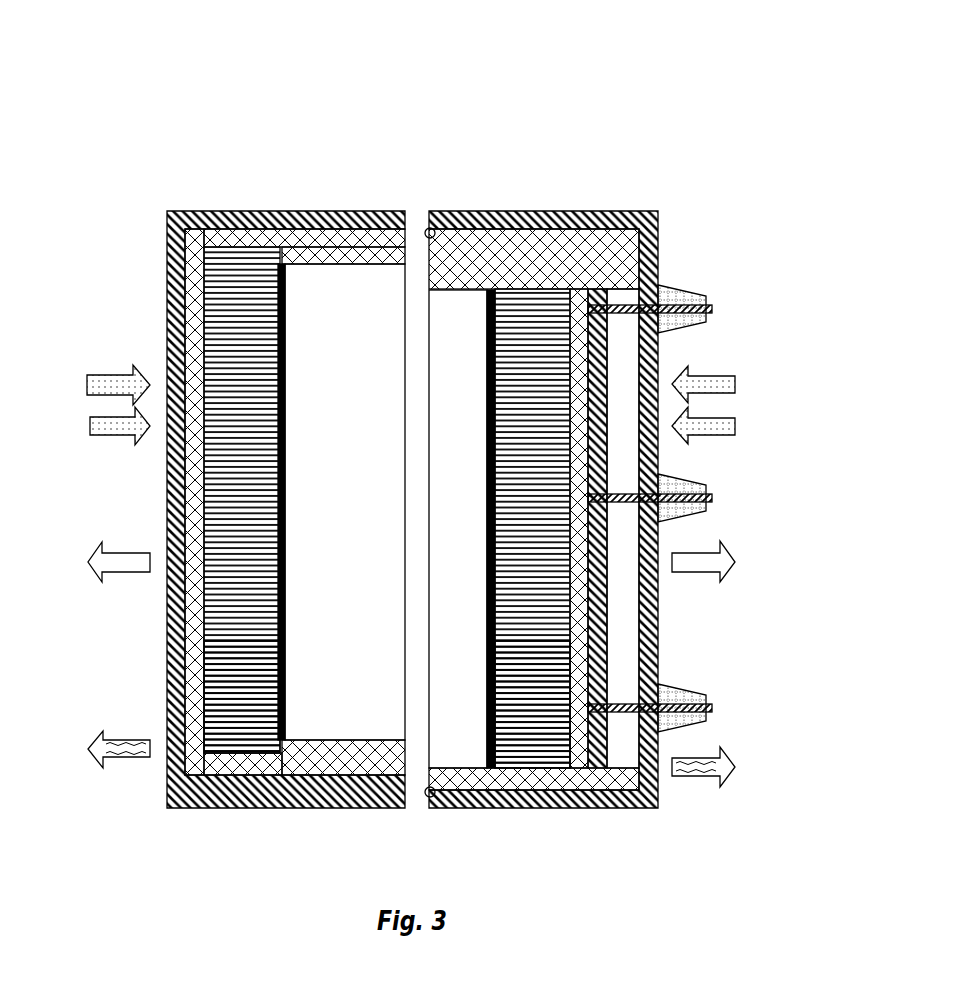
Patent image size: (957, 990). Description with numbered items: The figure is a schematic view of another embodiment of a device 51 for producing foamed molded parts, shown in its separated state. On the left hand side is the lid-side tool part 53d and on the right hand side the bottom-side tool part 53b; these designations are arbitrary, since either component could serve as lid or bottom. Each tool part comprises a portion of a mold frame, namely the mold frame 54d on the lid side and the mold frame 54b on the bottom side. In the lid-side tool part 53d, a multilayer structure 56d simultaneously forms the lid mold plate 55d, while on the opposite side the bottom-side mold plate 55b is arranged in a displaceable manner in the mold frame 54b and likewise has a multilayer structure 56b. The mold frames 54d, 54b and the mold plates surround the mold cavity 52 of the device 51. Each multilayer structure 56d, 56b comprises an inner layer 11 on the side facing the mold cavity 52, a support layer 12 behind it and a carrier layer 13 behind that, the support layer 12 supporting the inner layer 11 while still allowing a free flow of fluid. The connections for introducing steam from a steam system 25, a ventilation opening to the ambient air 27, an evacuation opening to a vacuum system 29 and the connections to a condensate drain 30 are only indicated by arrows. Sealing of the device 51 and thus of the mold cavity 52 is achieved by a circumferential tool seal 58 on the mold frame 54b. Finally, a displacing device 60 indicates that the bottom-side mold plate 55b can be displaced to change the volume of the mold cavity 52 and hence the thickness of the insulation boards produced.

The device for producing foamed molded parts 51 is at (110, 48).
The lid-side tool part 53d is at (397, 127).
The bottom-side tool part 53b is at (660, 127).
The multilayer structure 56d is at (283, 195).
The multilayer structure 56b is at (588, 190).
The circumferential tool seal 58 is at (426, 226).
The mold frame 54d is at (136, 232).
The mold frame 54b is at (676, 242).
The steam system 25 is at (88, 383).
The ambient air 27 is at (90, 425).
The vacuum system 29 is at (90, 555).
The condensate drain 30 is at (88, 750).
The carrier layer 13 is at (185, 641).
The support layer 12 is at (238, 730).
The inner layer 11 is at (283, 683).
The mold cavity 52 is at (385, 468).
The lid mold plate 55d is at (292, 845).
The bottom-side mold plate 55b is at (610, 845).
The displacing device 60 is at (712, 682).